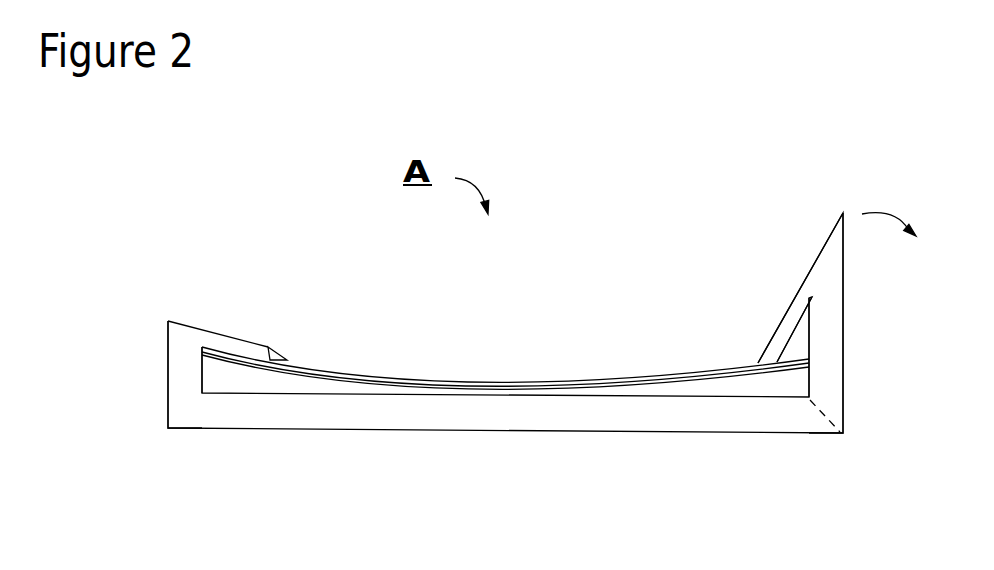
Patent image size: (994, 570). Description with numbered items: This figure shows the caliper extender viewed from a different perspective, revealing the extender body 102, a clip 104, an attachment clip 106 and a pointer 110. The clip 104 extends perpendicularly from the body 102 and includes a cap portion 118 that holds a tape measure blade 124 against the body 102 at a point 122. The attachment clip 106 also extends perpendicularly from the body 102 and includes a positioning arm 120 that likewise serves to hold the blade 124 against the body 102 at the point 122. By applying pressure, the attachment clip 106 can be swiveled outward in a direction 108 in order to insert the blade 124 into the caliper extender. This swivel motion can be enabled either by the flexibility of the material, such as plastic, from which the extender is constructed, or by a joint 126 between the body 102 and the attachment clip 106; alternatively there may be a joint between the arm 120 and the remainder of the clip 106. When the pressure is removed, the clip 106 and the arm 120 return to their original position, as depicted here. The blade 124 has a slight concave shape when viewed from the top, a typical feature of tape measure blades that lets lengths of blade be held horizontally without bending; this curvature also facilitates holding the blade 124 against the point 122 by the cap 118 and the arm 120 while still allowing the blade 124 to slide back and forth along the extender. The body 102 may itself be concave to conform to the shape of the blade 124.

The extender body 102 is at (533, 432).
The clip 104 is at (168, 356).
The attachment clip 106 is at (844, 305).
The direction 108 is at (889, 208).
The pointer 110 is at (278, 352).
The cap portion 118 is at (237, 340).
The positioning arm 120 is at (795, 299).
The point 122 is at (487, 390).
The blade 124 is at (668, 378).
The joint 126 is at (822, 412).